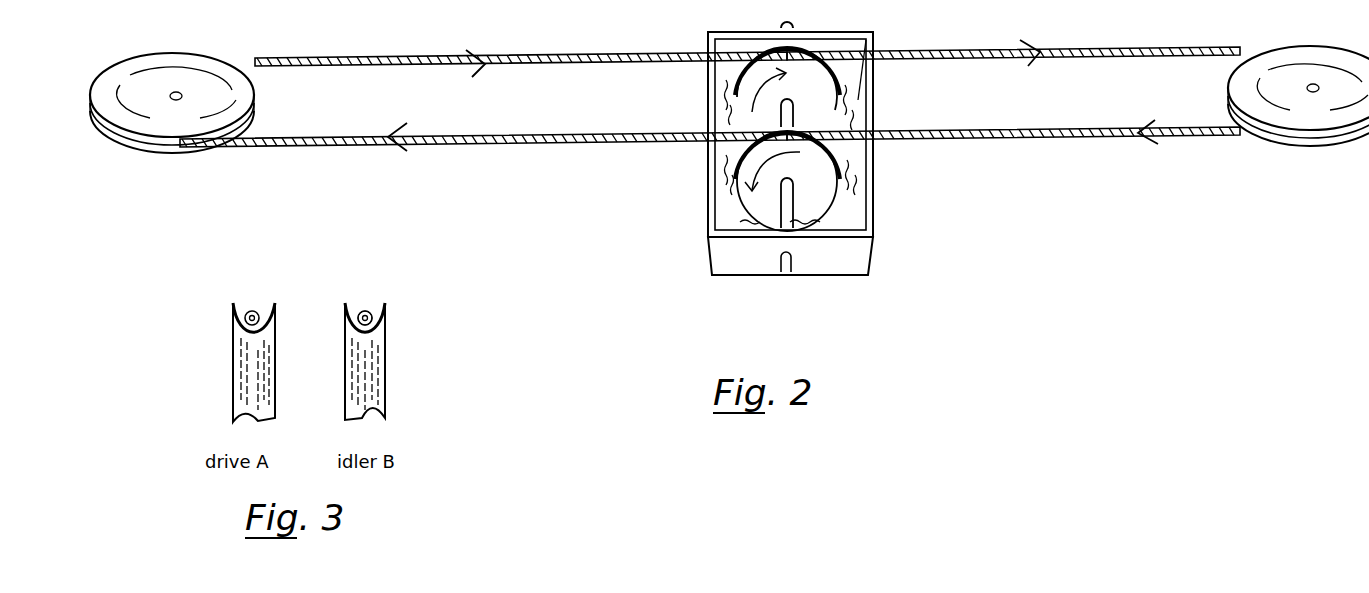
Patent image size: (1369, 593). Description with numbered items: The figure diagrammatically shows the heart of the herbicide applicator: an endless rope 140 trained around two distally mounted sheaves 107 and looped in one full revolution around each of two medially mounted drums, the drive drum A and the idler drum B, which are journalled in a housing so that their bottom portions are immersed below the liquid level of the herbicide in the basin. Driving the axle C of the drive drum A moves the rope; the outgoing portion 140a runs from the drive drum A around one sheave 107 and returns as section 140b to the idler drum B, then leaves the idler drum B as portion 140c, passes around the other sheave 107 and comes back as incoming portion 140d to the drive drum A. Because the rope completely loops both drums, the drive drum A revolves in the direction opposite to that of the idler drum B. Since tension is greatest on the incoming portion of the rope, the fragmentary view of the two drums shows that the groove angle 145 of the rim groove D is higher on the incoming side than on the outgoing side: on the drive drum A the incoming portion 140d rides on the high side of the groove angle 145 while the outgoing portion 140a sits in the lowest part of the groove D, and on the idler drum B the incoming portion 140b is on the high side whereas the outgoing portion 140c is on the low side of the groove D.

In FIG. 2, the distally mounted sheaves 107 is at (218, 88).
In FIG. 2, the endless rope 140 is at (710, 93).
In FIG. 2, the outgoing rope portion from drive drum 140a is at (1175, 46).
In FIG. 3, the outgoing rope portion from drive drum 140a is at (244, 316).
In FIG. 2, the incoming rope portion to idler drum 140b is at (1056, 135).
In FIG. 3, the incoming rope portion to idler drum 140b is at (373, 309).
In FIG. 2, the outgoing rope portion from idler drum 140c is at (500, 138).
In FIG. 3, the outgoing rope portion from idler drum 140c is at (355, 322).
In FIG. 2, the incoming rope portion to drive drum 140d is at (500, 60).
In FIG. 3, the incoming rope portion to drive drum 140d is at (260, 312).
In FIG. 3, the groove angle 145 is at (372, 320).
In FIG. 2, the drive drum A is at (805, 95).
In FIG. 2, the idler drum B is at (813, 183).
In FIG. 2, the axle C is at (800, 220).
In FIG. 3, the groove D is at (258, 240).